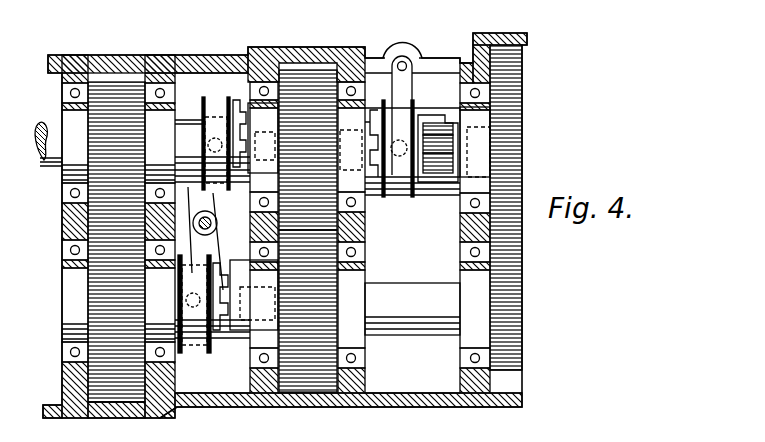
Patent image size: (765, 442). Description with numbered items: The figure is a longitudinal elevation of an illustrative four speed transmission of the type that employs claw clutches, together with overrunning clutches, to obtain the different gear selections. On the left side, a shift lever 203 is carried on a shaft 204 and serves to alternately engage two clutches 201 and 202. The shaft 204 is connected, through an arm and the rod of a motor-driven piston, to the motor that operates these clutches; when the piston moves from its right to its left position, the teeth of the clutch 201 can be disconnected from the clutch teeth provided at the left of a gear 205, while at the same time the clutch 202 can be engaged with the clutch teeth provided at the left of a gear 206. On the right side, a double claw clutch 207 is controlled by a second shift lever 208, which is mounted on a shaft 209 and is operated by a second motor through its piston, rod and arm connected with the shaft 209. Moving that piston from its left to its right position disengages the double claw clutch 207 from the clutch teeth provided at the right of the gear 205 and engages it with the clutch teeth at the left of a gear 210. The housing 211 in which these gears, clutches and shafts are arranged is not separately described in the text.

The clutch 201 is at (210, 117).
The clutch 202 is at (190, 340).
The shift lever 203 is at (203, 212).
The shaft 204 is at (217, 225).
The gear 205 is at (308, 78).
The gear 206 is at (303, 383).
The double claw clutch 207 is at (407, 177).
The shift lever 208 is at (398, 88).
The shaft 209 is at (405, 63).
The gear 210 is at (523, 92).
The housing 211 is at (281, 237).